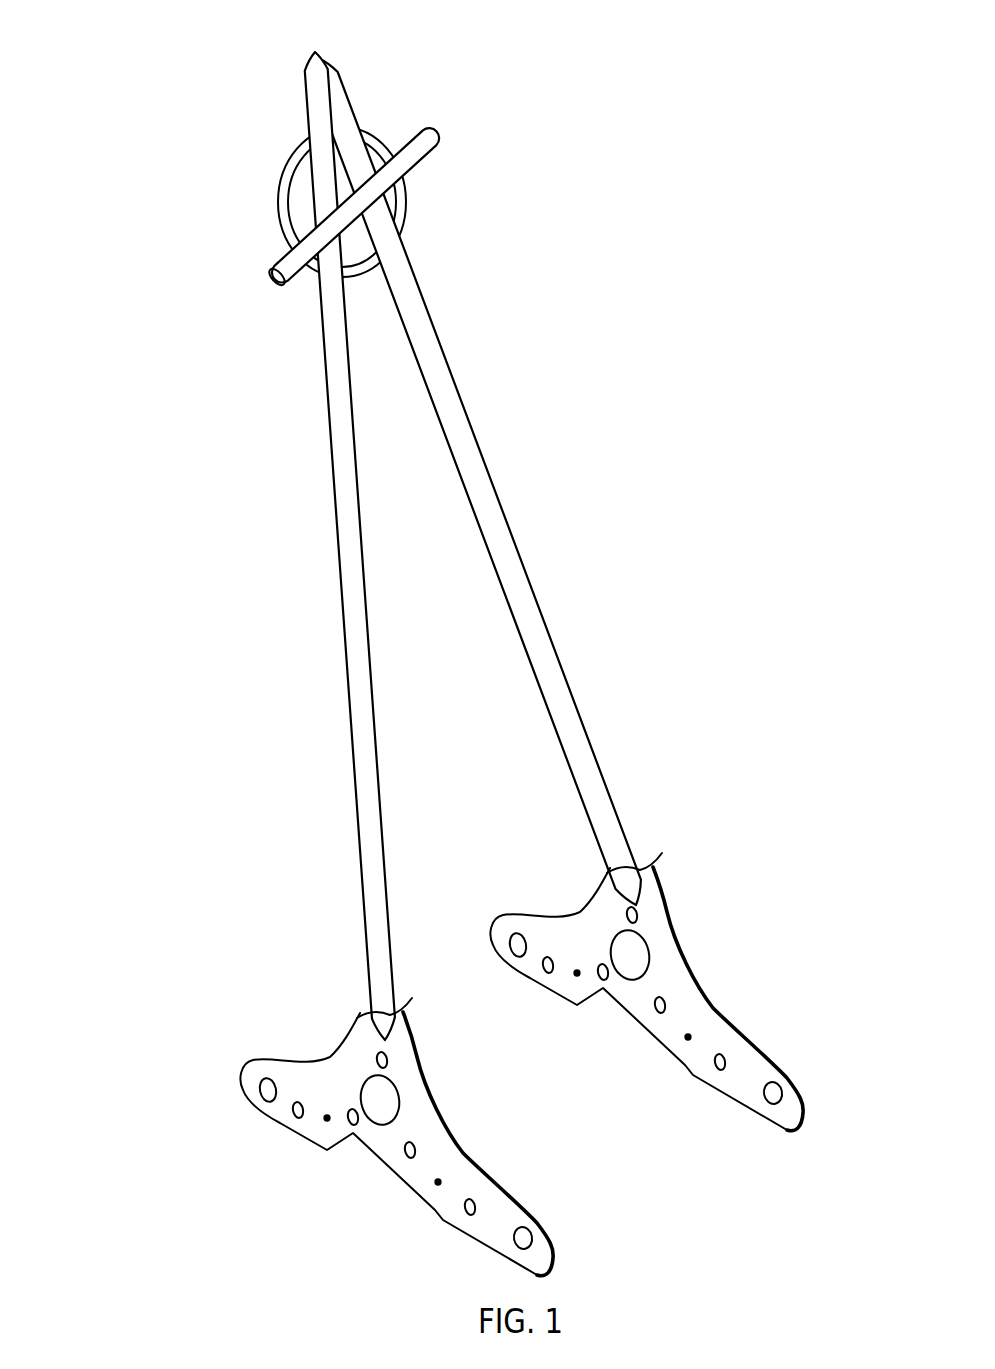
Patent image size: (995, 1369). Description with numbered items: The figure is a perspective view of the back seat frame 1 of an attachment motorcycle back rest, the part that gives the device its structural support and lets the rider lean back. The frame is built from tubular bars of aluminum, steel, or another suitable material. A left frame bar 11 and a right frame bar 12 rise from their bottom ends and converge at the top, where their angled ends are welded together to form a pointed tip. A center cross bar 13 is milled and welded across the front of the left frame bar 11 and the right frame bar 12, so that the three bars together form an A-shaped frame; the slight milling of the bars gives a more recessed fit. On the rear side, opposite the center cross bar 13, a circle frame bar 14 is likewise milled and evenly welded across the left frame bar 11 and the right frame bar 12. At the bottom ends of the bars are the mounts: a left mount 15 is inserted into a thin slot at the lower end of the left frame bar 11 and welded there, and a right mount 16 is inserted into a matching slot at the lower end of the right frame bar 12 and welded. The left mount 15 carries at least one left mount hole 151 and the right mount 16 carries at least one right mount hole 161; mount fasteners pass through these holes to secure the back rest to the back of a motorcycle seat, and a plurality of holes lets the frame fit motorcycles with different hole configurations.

The back seat frame 1 is at (296, 42).
The left frame bar 11 is at (495, 533).
The right frame bar 12 is at (352, 535).
The center cross bar 13 is at (273, 280).
The circle frame bar 14 is at (287, 187).
The left mount 15 is at (677, 957).
The left mount hole 151 is at (640, 965).
The right mount 16 is at (319, 1149).
The right mount hole 161 is at (267, 1085).